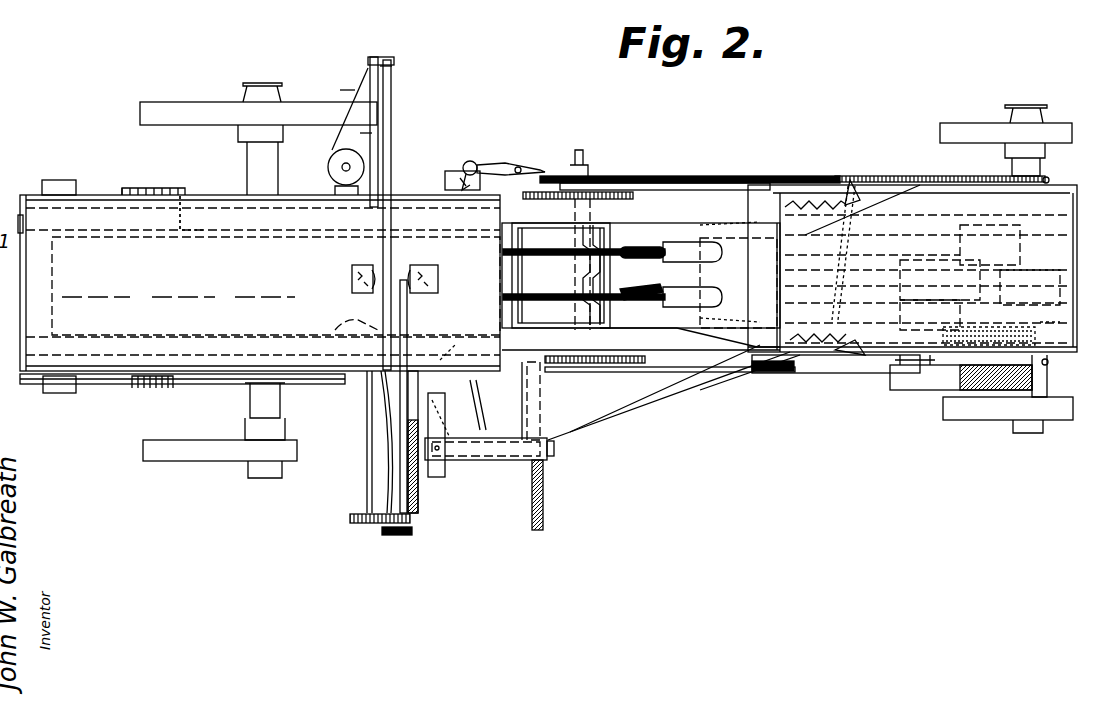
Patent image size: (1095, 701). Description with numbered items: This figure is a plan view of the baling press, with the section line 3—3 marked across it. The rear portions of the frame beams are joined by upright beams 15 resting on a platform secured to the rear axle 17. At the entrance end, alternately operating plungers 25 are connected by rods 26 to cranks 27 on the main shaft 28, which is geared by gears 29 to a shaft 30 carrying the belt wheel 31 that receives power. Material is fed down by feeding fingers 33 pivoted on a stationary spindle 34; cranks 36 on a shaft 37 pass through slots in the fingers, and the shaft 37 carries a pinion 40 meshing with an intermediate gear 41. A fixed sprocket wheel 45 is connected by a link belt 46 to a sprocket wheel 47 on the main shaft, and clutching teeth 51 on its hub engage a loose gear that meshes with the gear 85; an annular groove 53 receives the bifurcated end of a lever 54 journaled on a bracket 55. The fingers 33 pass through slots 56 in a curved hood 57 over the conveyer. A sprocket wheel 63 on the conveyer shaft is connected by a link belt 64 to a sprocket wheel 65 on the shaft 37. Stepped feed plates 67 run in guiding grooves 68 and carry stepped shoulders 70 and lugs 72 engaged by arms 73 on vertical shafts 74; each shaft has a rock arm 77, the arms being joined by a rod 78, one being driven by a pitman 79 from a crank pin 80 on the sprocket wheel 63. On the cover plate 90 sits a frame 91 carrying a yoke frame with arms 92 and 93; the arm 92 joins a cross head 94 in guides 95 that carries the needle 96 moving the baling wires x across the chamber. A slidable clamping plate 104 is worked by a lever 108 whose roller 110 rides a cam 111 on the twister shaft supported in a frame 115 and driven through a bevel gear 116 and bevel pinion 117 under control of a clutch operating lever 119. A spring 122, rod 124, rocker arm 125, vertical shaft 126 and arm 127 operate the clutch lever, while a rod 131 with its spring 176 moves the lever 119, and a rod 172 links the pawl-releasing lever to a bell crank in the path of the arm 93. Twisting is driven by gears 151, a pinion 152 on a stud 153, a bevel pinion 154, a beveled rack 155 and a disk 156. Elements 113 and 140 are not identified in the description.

The section line 3 is at (1057, 311).
The upright beams 15 is at (60, 184).
The rear axle 17 is at (330, 168).
The plungers 25 is at (703, 247).
The rods 26 is at (912, 268).
The cranks 27 is at (985, 275).
The main shaft 28 is at (1010, 308).
The gears 29 is at (1030, 335).
The shaft 30 is at (950, 366).
The belt wheel 31 is at (1000, 382).
The feeding fingers 33 is at (625, 250).
The stationary rod or spindle 34 is at (502, 257).
The cranks 36 is at (567, 275).
The shaft 37 is at (568, 328).
The pinion 40 is at (638, 339).
The intermediate gear 41 is at (630, 372).
The sprocket wheel 45 is at (610, 177).
The link belt 46 is at (790, 176).
The sprocket wheel 47 is at (1000, 170).
The clutching teeth 51 is at (562, 203).
The annular groove 53 is at (585, 165).
The lever 54 is at (540, 170).
The bracket 55 is at (503, 163).
The slots 56 is at (795, 205).
The curved hood 57 is at (738, 275).
The sprocket wheel 63 is at (765, 373).
The link belt 64 is at (700, 390).
The sprocket wheel 65 is at (660, 400).
The feed plates 67 is at (880, 200).
The guiding grooves 68 is at (890, 373).
The stepped shoulders 70 is at (862, 219).
The lugs 72 is at (855, 345).
The arms 73 is at (855, 373).
The vertical shafts 74 is at (845, 373).
The rock arm or plate 77 is at (858, 180).
The rod 78 is at (838, 320).
The pitman 79 is at (795, 373).
The crank pin 80 is at (770, 380).
The gear 85 is at (640, 247).
The cover or top plate 90 is at (259, 283).
The frame 91 is at (355, 265).
The arm 92 is at (392, 112).
The arm 93 is at (386, 396).
The cross head 94 is at (368, 62).
The guides 95 is at (385, 70).
The needle 96 is at (363, 137).
The slidable plate 104 is at (385, 400).
The lever 108 is at (440, 360).
The anti-friction roller 110 is at (480, 460).
The cam 111 is at (445, 460).
The arm 113 is at (335, 340).
The frame 115 is at (545, 480).
The bevel gear 116 is at (548, 525).
The bevel pinion 117 is at (553, 450).
The clutch operating lever 119 is at (528, 400).
The spring 122 is at (140, 188).
The rod 124 is at (218, 192).
The rocker arm 125 is at (452, 186).
The vertical shaft 126 is at (463, 176).
The arm 127 is at (470, 161).
The rod 131 is at (205, 385).
The rod 140 is at (366, 507).
The gears 151 is at (358, 524).
The pinion 152 is at (398, 535).
The short shaft or stud 153 is at (420, 518).
The bevel pinion 154 is at (392, 535).
The beveled rack 155 is at (418, 498).
The revoluble disk 156 is at (372, 460).
The rod 172 is at (295, 384).
The spring 176 is at (140, 385).
The baling wires x is at (350, 94).